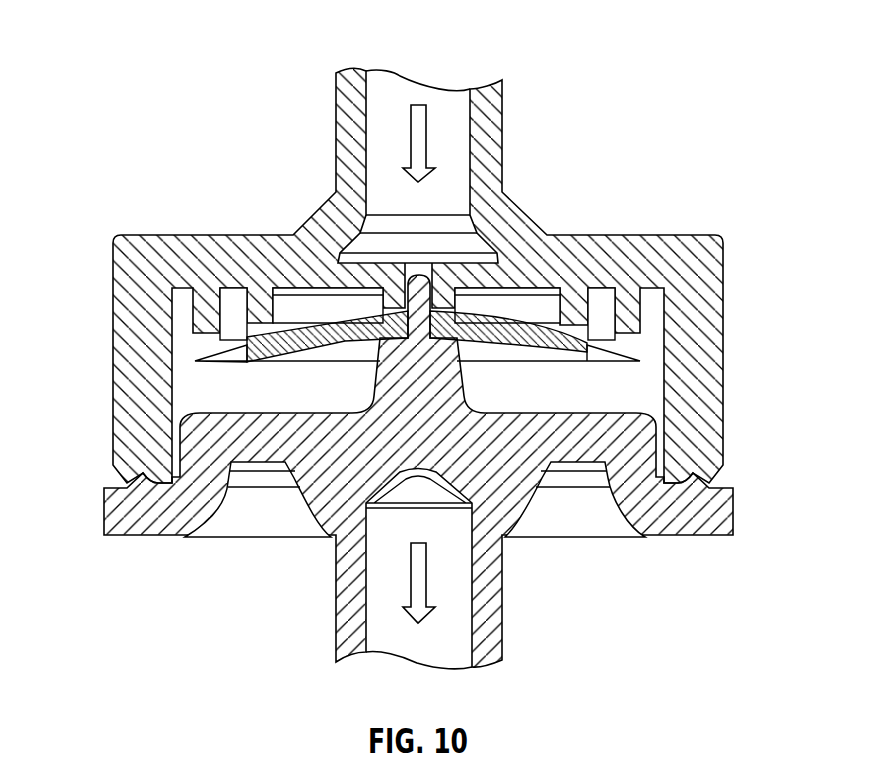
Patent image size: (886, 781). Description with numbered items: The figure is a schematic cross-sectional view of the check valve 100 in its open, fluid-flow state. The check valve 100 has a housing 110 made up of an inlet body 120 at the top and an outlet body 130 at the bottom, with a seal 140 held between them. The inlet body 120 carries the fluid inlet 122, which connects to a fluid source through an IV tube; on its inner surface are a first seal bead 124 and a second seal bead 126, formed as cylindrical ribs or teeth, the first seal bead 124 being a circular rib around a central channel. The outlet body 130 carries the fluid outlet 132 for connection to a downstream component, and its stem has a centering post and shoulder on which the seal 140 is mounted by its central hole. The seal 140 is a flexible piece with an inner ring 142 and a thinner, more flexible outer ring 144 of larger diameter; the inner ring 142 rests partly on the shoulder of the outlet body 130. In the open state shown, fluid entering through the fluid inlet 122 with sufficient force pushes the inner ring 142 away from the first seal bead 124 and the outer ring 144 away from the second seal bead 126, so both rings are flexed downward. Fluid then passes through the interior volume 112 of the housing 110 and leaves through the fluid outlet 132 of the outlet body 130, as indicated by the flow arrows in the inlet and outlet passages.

The check valve 100 is at (439, 340).
The housing 110 is at (439, 368).
The interior volume 112 is at (537, 390).
The inlet body 120 is at (415, 275).
The fluid inlet 122 is at (503, 140).
The first seal bead 124 is at (267, 298).
The second seal bead 126 is at (617, 325).
The outlet body 130 is at (418, 472).
The fluid outlet 132 is at (505, 650).
The seal 140 is at (428, 290).
The inner ring 142 is at (325, 337).
The outer ring 144 is at (588, 348).